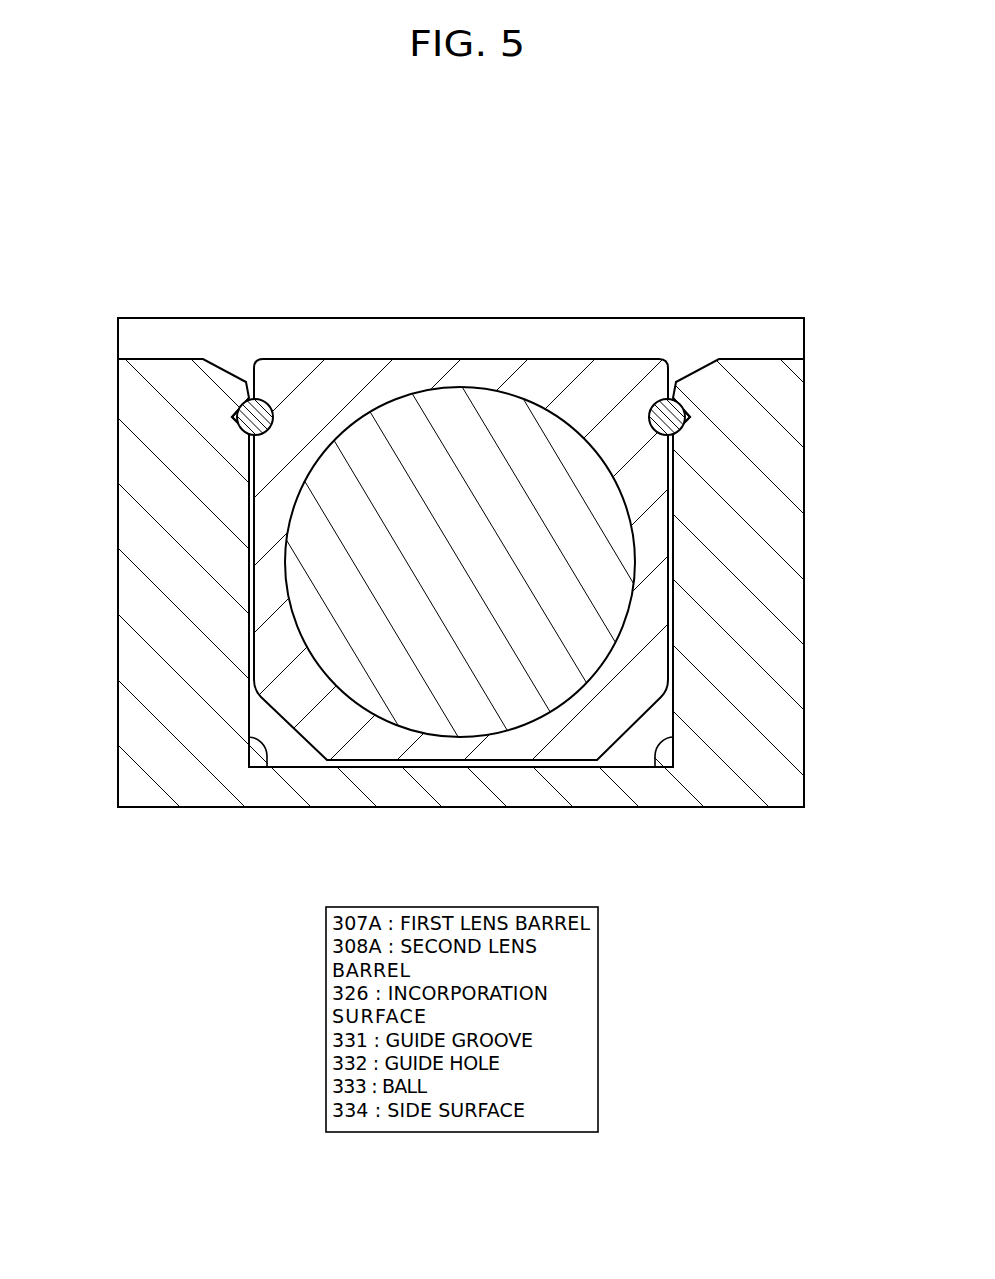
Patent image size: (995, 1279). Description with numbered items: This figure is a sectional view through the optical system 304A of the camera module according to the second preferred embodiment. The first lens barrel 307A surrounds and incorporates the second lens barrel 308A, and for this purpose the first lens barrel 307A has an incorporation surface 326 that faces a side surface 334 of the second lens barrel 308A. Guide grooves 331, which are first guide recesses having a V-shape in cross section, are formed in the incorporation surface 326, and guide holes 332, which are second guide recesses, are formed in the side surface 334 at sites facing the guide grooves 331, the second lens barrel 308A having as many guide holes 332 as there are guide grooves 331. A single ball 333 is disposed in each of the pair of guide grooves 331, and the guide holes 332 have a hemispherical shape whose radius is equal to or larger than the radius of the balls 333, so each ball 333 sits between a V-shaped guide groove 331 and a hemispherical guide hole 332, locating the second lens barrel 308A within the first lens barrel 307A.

The optical system 304A is at (699, 222).
The first lens barrel 307A is at (757, 783).
The second lens barrel 308A is at (583, 737).
The incorporation surface 326 is at (655, 855).
The guide groove 331 is at (233, 417).
The guide hole 332 is at (268, 401).
The ball 333 is at (244, 400).
The side surface 334 is at (825, 537).